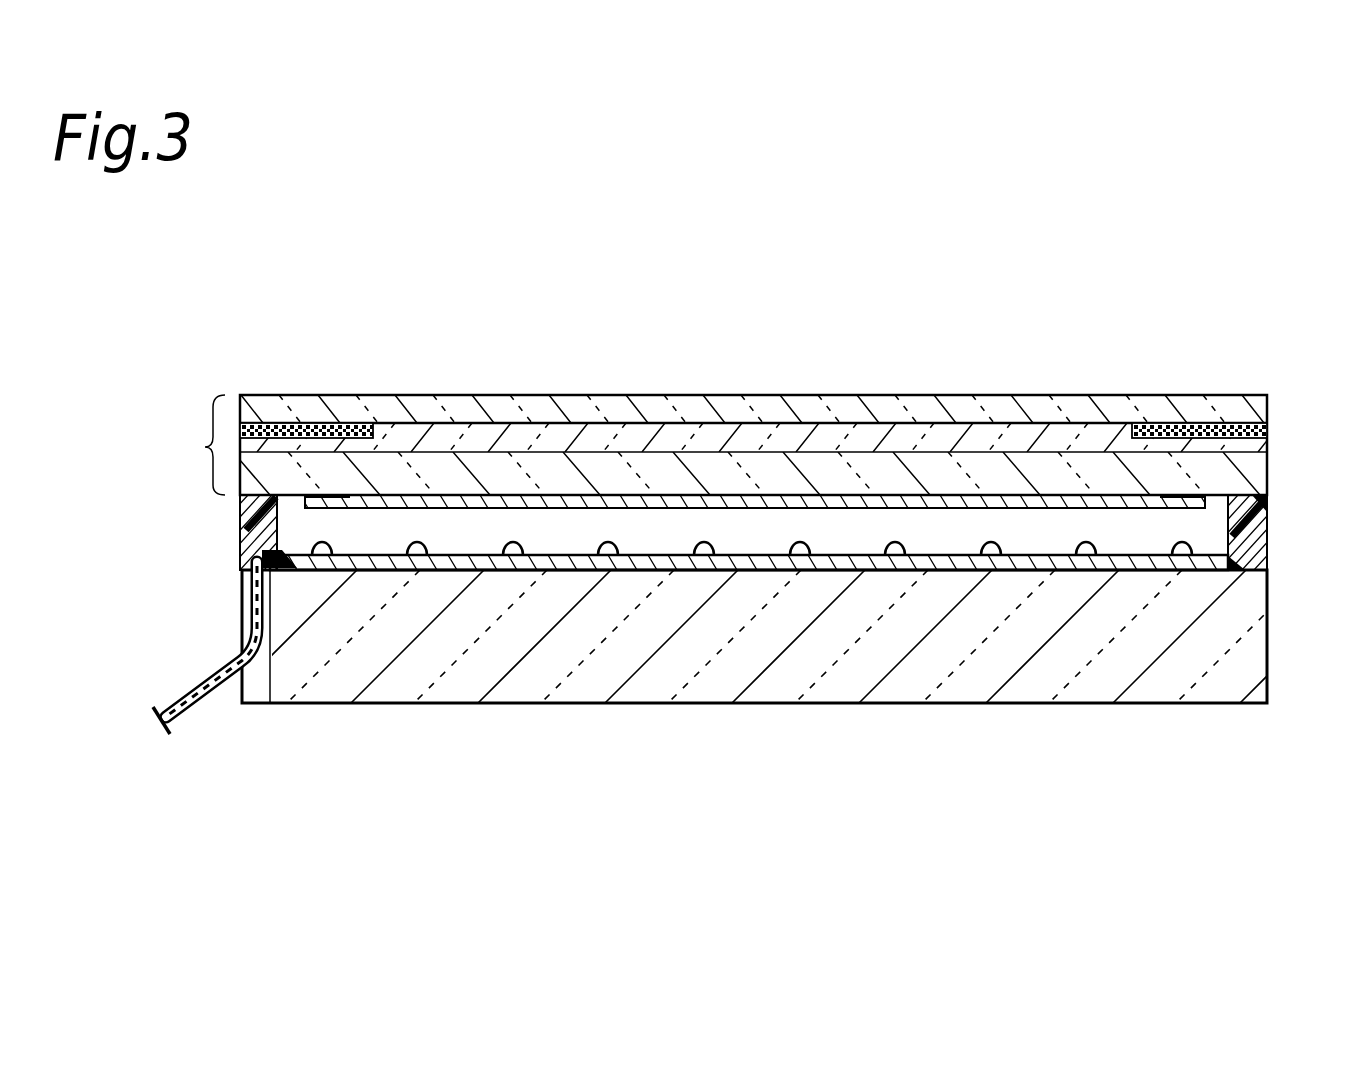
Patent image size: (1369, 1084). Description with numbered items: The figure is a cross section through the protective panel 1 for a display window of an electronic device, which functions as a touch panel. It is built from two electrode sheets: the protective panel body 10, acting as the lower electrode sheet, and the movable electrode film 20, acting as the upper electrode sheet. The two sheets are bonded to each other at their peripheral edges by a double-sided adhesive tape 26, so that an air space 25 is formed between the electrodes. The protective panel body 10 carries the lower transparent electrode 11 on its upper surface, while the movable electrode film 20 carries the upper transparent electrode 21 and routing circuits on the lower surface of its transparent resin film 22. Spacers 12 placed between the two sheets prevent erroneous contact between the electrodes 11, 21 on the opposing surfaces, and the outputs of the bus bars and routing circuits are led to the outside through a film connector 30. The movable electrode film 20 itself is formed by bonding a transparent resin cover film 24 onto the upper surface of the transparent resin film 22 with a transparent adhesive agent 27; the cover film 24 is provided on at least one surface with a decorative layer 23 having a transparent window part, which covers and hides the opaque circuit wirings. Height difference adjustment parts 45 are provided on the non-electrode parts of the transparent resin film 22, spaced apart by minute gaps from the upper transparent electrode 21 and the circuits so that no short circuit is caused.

The protective panel 1 is at (1038, 268).
The protective panel body 10 is at (1250, 647).
The lower transparent electrode 11 is at (837, 567).
The spacers 12 is at (993, 550).
The movable electrode film 20 is at (710, 445).
The upper transparent electrode 21 is at (740, 500).
The transparent resin film 22 is at (1233, 475).
The decorative layer 23 is at (300, 425).
The transparent resin cover film 24 is at (845, 412).
The air space 25 is at (470, 530).
The double-sided adhesive tape 26 is at (257, 528).
The transparent adhesive agent 27 is at (560, 440).
The film connector 30 is at (193, 693).
The height difference adjustment parts 45 is at (330, 497).